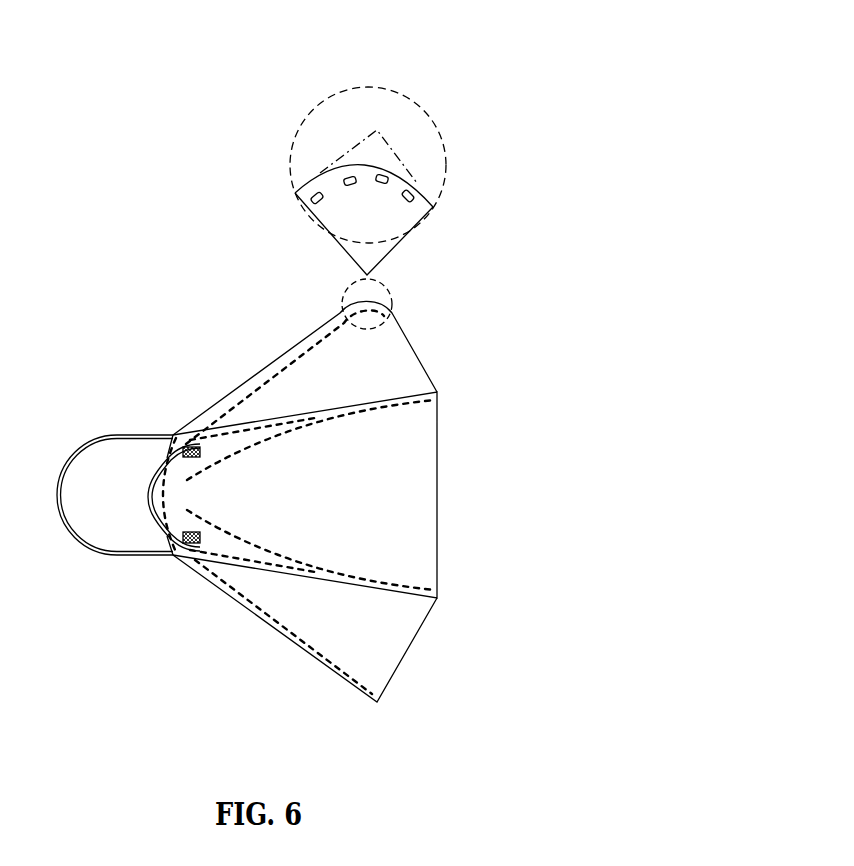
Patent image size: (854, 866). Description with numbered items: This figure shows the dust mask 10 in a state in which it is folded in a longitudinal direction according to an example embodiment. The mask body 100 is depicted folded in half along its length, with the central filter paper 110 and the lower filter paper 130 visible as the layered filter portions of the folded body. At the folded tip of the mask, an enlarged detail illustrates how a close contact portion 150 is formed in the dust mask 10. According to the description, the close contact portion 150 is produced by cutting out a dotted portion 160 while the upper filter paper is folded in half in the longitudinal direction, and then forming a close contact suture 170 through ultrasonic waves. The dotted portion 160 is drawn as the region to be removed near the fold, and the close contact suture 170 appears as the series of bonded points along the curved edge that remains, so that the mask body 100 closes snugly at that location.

The dust mask 10 is at (468, 297).
The mask body 100 is at (421, 467).
The central filter paper 110 is at (422, 542).
The lower filter paper 130 is at (403, 353).
The close contact portion 150 is at (362, 163).
The dotted portion 160 is at (390, 148).
The close contact suture 170 is at (310, 197).